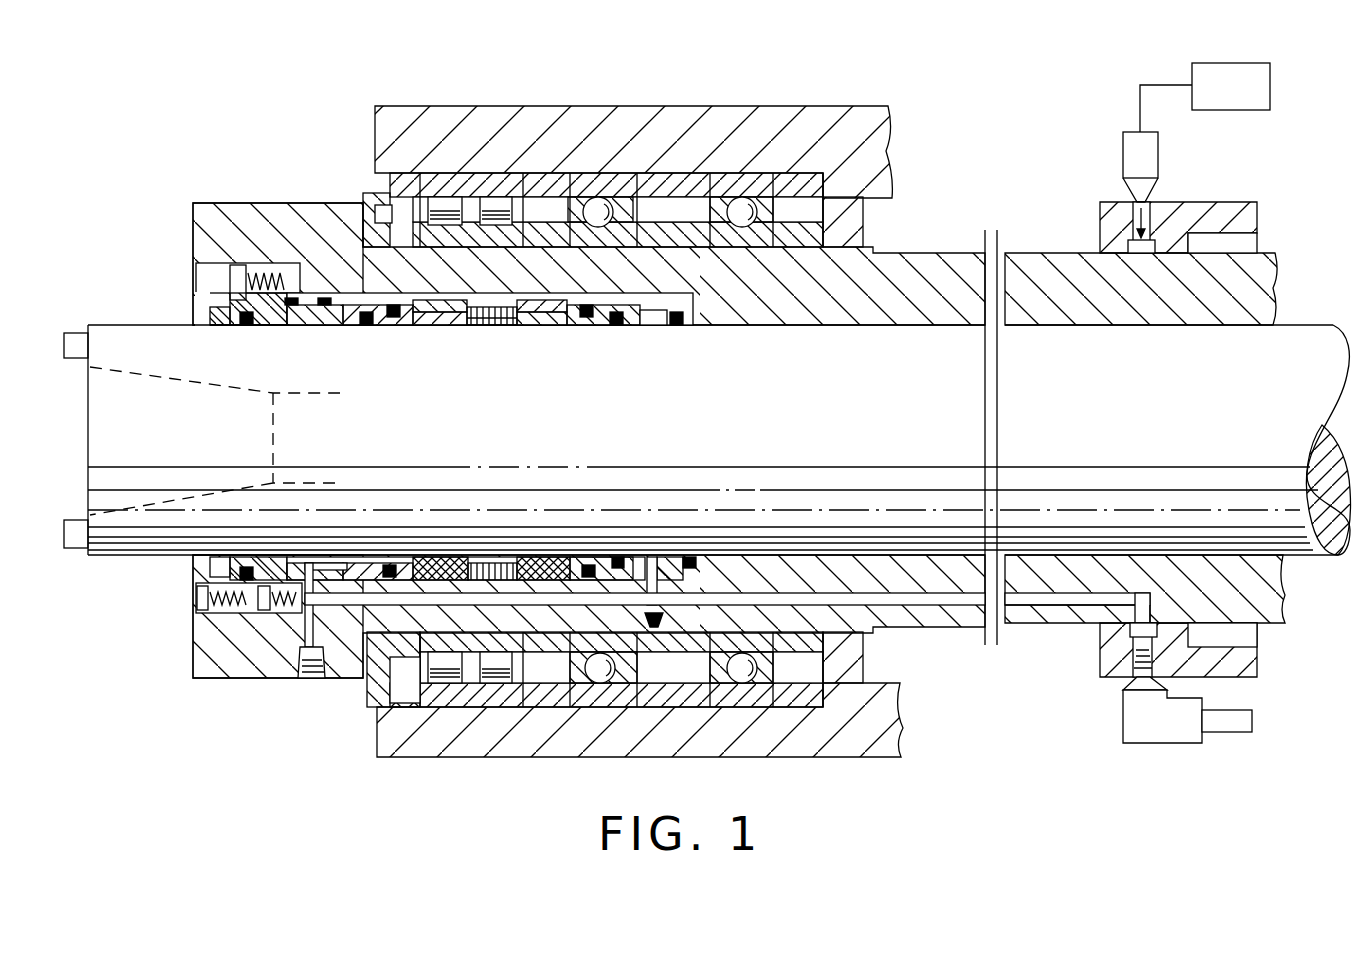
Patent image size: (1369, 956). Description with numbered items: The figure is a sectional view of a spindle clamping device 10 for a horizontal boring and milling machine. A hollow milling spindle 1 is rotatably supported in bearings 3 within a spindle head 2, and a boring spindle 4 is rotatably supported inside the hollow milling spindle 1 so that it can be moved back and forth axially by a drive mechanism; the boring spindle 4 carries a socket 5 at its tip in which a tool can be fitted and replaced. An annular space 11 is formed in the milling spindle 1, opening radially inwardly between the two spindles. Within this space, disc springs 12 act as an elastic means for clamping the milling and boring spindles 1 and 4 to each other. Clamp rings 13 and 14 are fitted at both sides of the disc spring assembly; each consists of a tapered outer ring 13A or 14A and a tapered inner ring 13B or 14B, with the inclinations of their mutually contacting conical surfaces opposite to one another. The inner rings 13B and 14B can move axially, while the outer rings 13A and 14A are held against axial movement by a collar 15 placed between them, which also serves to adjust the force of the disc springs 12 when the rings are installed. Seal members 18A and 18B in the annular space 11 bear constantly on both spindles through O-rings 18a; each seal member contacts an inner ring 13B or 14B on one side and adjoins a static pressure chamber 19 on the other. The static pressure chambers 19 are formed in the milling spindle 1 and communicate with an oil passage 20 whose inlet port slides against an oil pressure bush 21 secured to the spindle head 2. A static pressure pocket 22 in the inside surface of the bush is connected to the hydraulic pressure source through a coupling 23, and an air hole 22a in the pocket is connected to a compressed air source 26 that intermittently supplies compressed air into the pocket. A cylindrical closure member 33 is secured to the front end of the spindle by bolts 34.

The milling spindle 1 is at (226, 215).
The spindle head 2 is at (375, 125).
The bearings 3 is at (488, 697).
The boring spindle 4 is at (112, 335).
The socket 5 is at (88, 375).
The spindle clamping device 10 is at (508, 333).
The annular space 11 is at (430, 323).
The disc springs 12 is at (487, 327).
The clamp ring 13 is at (445, 550).
The tapered outer ring 13A is at (440, 290).
The tapered inner ring 13B is at (448, 320).
The clamp ring 14 is at (537, 550).
The tapered outer ring 14A is at (533, 297).
The tapered inner ring 14B is at (533, 323).
The collar 15 is at (505, 292).
The seal member 18A is at (595, 557).
The seal member 18B is at (377, 557).
The O-rings 18a is at (617, 557).
The static pressure chambers 19 is at (342, 558).
The oil passage 20 is at (750, 597).
The oil pressure bush 21 is at (1258, 670).
The static pressure pocket 22 is at (1130, 630).
The air hole 22a is at (1125, 203).
The coupling 23 is at (1140, 713).
The compressed air source 26 is at (1270, 87).
The cylindrical closure member 33 is at (285, 327).
The bolts 34 is at (235, 278).